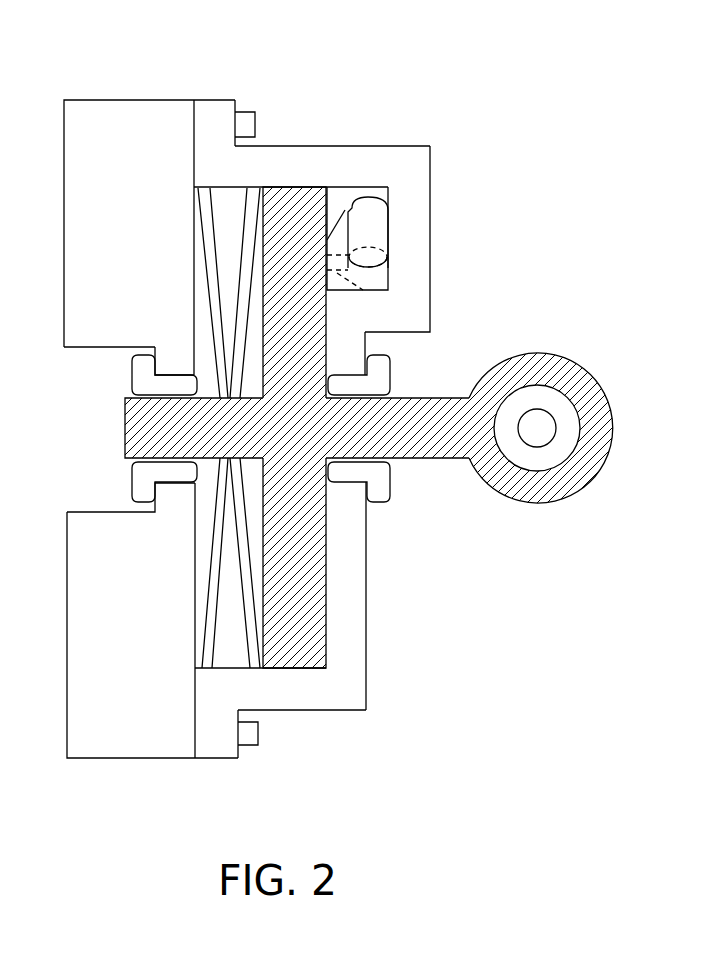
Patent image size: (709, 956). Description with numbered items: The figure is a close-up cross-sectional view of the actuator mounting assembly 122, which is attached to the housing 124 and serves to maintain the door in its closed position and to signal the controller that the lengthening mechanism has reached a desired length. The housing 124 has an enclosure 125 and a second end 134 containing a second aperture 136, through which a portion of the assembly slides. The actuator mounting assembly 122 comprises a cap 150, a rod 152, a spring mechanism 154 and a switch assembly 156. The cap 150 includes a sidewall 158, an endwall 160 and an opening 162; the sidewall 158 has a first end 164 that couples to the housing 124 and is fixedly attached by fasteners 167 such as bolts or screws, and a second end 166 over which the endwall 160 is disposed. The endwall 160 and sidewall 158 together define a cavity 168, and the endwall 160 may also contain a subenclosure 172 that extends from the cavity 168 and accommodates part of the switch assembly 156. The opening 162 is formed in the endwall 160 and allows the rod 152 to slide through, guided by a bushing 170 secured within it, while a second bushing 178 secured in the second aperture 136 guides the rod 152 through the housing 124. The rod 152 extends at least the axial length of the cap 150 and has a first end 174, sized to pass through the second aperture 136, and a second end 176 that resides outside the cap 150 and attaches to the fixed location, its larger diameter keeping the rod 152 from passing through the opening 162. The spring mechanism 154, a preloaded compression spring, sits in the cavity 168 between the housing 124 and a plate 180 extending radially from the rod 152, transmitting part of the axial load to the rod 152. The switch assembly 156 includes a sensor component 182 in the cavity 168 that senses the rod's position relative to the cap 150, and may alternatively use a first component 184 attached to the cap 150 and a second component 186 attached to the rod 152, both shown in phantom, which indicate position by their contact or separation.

The actuator mounting assembly 122 is at (436, 114).
The housing 124 is at (107, 103).
The enclosure 125 is at (96, 509).
The second end 134 is at (197, 712).
The second aperture 136 is at (177, 372).
The cap 150 is at (312, 146).
The rod 152 is at (428, 458).
The spring mechanism 154 is at (207, 262).
The switch assembly 156 is at (372, 197).
The sidewall 158 is at (312, 710).
The endwall 160 is at (358, 653).
The opening 162 is at (347, 373).
The first end 164 is at (194, 146).
The second end 166 is at (436, 146).
The fasteners 167 is at (243, 112).
The cavity 168 is at (227, 640).
The bushing 170 is at (380, 378).
The subenclosure 172 is at (388, 279).
The first end 174 is at (125, 428).
The second end 176 is at (609, 430).
The bushing 178 is at (130, 383).
The plate 180 is at (316, 557).
The sensor component 182 is at (388, 220).
The first component 184 is at (388, 246).
The second component 186 is at (362, 271).